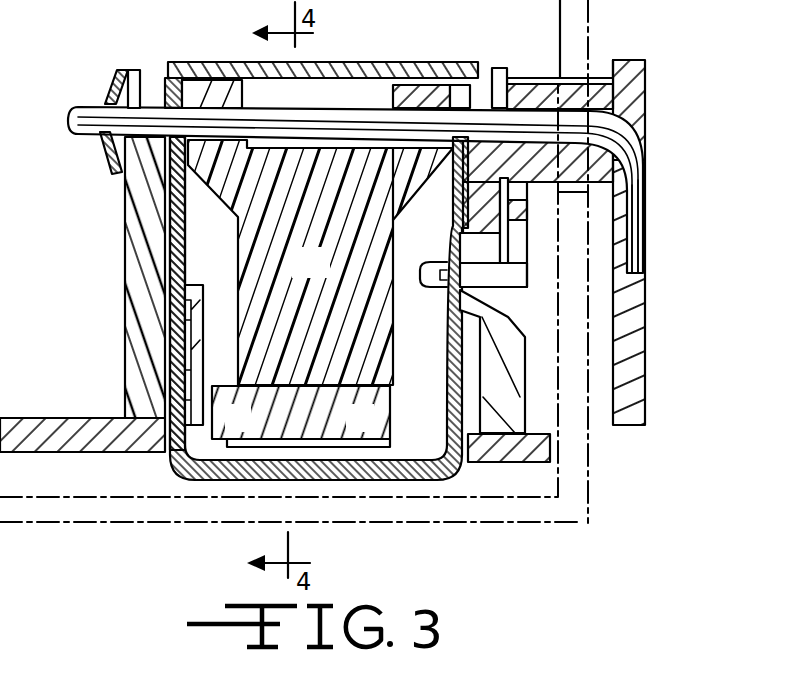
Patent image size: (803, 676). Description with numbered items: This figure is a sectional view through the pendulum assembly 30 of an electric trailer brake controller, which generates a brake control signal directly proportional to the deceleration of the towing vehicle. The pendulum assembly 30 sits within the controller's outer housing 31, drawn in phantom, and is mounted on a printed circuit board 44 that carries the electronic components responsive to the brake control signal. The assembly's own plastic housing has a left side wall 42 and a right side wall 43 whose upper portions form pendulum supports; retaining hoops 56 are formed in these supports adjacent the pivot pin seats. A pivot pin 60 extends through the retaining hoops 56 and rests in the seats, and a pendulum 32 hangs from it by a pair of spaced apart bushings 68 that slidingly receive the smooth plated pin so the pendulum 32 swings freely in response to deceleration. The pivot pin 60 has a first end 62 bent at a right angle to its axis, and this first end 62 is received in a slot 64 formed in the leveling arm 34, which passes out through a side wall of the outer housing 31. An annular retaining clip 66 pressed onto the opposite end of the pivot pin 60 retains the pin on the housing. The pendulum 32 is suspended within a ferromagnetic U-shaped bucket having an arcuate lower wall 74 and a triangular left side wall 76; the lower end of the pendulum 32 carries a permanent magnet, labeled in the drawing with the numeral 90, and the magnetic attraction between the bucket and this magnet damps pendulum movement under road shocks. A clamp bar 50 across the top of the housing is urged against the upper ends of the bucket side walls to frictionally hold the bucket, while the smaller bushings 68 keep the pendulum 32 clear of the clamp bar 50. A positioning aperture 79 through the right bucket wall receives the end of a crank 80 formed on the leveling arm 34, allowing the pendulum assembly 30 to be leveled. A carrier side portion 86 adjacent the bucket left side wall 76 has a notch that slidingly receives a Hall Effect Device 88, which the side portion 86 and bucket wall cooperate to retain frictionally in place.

The pendulum assembly 30 is at (676, 36).
The outer housing 31 is at (576, 508).
The pendulum 32 is at (305, 265).
The leveling arm 34 is at (638, 321).
The left side wall 42 is at (135, 332).
The right side wall 43 is at (498, 327).
The printed circuit board 44 is at (552, 450).
The clamp bar 50 is at (370, 62).
The retaining hoops 56 is at (131, 70).
The pivot pin 60 is at (586, 122).
The first end 62 is at (643, 210).
The slot 64 is at (646, 128).
The retaining clip 66 is at (113, 78).
The bushings 68 is at (185, 85).
The lower wall 74 is at (318, 482).
The left side wall 76 is at (190, 239).
The positioning aperture 79 is at (430, 293).
The crank 80 is at (417, 262).
The side portion 86 is at (200, 345).
The Hall Effect Device 88 is at (176, 452).
The magnet 90 is at (383, 407).